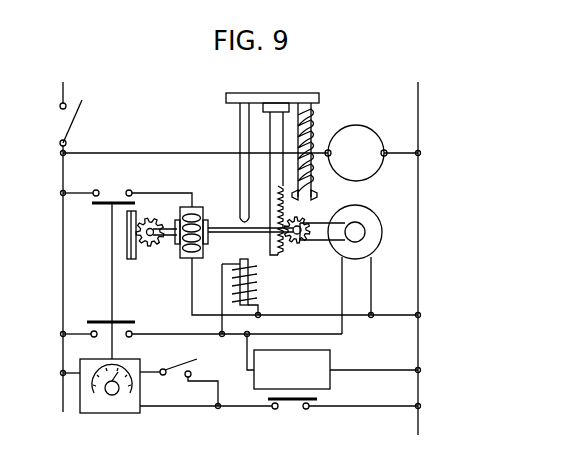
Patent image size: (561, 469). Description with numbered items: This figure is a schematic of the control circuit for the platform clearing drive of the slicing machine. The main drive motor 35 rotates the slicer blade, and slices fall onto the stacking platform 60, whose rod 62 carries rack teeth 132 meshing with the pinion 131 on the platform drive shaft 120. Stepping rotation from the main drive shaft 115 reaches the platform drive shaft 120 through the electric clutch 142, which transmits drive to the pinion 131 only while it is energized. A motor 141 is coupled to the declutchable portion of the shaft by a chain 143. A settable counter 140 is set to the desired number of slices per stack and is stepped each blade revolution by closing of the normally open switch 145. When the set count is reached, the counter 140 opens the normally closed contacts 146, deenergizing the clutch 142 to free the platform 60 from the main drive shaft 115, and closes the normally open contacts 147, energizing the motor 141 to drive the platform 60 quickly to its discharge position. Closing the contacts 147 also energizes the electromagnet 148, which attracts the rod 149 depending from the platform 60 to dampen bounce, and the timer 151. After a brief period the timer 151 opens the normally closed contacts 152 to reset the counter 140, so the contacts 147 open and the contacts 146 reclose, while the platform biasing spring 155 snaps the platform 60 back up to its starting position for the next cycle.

The main drive motor 35 is at (367, 132).
The stacking platform 60 is at (295, 93).
The rod 62 is at (270, 131).
The drive shaft 115 is at (171, 246).
The platform drive shaft 120 is at (212, 237).
The pinion 131 is at (303, 219).
The rack teeth 132 is at (282, 257).
The settable counter 140 is at (105, 411).
The motor 141 is at (372, 215).
The electric clutch 142 is at (204, 213).
The chain 143 is at (321, 243).
The normally open switch 145 is at (184, 377).
The normally closed contacts 146 is at (108, 201).
The normally open contacts 147 is at (135, 326).
The electromagnet 148 is at (255, 292).
The rod 149 is at (240, 118).
The timer 151 is at (331, 354).
The normally closed contacts 152 is at (292, 407).
The platform biasing spring 155 is at (312, 127).